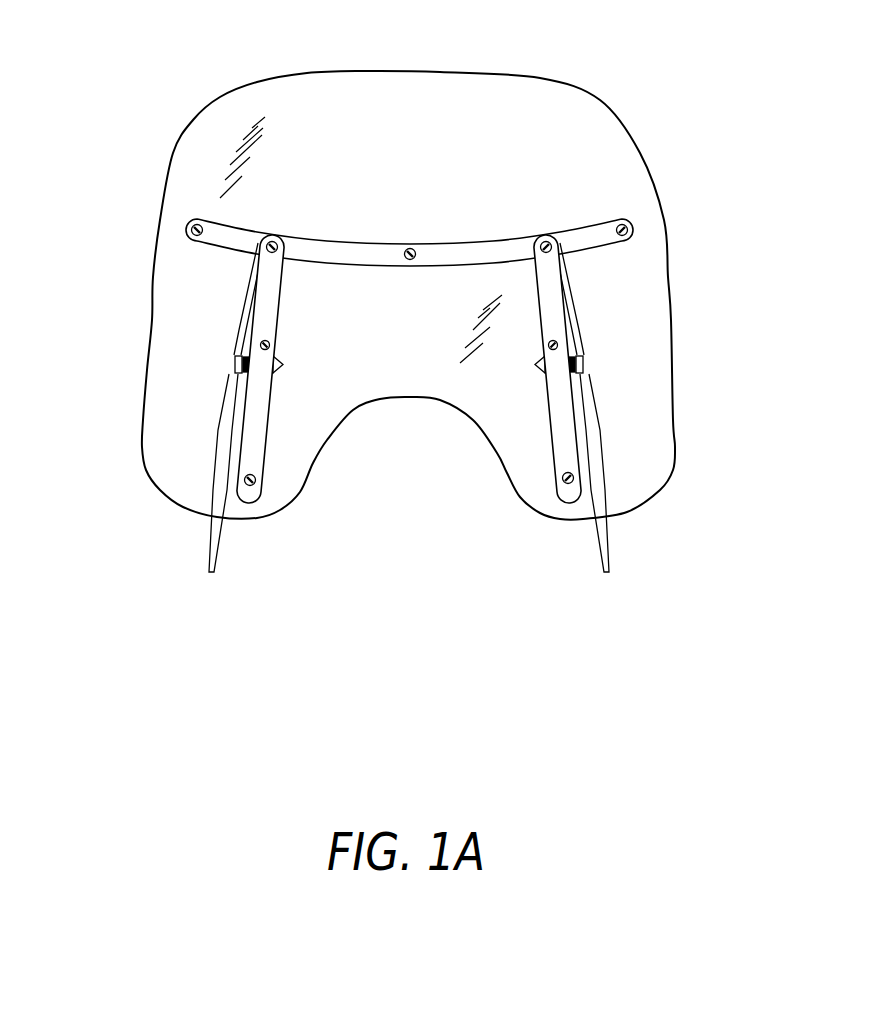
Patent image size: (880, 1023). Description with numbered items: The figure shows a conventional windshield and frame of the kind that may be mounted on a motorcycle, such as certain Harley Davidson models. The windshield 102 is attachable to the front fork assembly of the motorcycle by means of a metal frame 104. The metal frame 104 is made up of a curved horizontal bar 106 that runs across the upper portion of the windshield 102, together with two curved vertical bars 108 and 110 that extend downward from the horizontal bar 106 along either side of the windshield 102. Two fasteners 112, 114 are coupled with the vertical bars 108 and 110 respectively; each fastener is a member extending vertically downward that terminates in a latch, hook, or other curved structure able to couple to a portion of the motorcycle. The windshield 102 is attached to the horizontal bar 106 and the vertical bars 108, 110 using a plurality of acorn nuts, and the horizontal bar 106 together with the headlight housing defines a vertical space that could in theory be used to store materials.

The windshield 102 is at (293, 90).
The metal frame 104 is at (622, 220).
The curved horizontal bar 106 is at (477, 250).
The curved vertical bar 108 is at (552, 312).
The curved vertical bar 110 is at (263, 322).
The fastener 112 is at (578, 435).
The fastener 114 is at (227, 448).